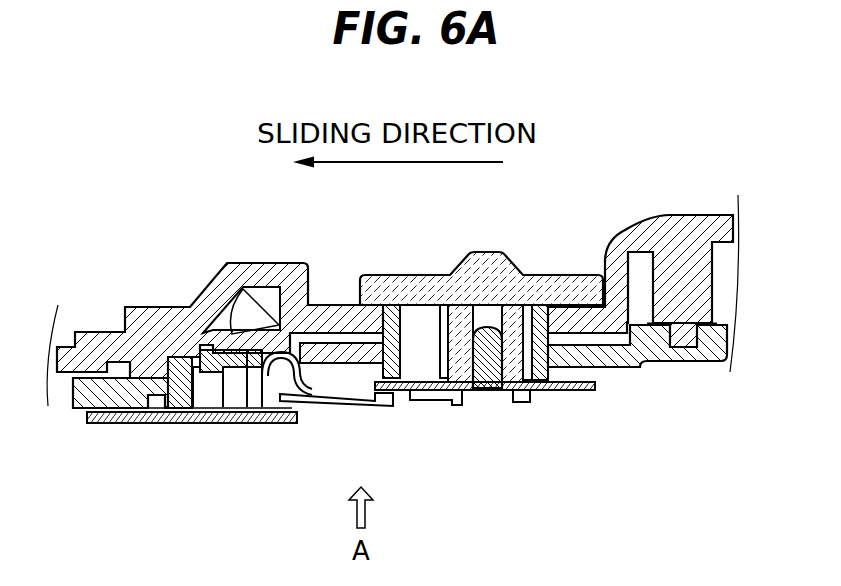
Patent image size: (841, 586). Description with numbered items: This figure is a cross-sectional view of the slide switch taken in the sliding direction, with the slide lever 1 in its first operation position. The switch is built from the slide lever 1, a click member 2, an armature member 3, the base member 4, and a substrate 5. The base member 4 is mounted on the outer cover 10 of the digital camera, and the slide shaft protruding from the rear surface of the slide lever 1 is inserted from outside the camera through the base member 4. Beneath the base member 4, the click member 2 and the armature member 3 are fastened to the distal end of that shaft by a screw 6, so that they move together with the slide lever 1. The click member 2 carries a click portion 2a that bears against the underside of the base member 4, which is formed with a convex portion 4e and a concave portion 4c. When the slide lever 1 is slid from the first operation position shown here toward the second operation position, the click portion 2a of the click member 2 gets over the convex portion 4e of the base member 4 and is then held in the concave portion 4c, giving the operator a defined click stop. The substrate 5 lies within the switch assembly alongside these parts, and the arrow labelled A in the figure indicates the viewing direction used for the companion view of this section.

The slide lever 1 is at (487, 268).
The click member 2 is at (577, 392).
The click portion 2a is at (283, 364).
The armature member 3 is at (372, 407).
The base member 4 is at (83, 398).
The concave portion 4c is at (240, 351).
The convex portion 4e is at (257, 354).
The substrate 5 is at (177, 357).
The screw 6 is at (475, 400).
The outer cover 10 is at (244, 275).